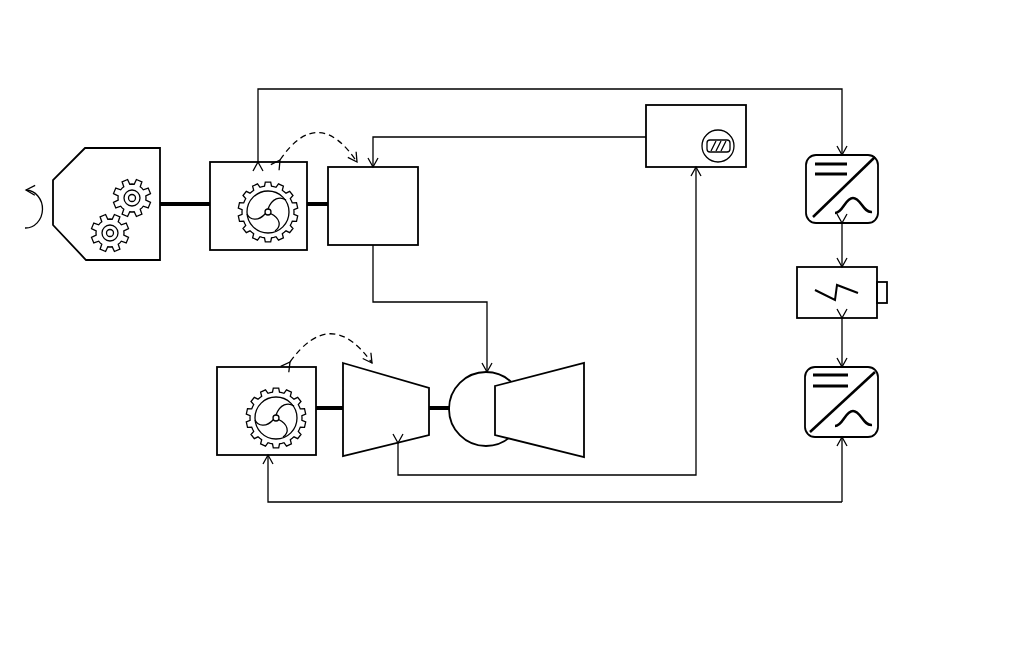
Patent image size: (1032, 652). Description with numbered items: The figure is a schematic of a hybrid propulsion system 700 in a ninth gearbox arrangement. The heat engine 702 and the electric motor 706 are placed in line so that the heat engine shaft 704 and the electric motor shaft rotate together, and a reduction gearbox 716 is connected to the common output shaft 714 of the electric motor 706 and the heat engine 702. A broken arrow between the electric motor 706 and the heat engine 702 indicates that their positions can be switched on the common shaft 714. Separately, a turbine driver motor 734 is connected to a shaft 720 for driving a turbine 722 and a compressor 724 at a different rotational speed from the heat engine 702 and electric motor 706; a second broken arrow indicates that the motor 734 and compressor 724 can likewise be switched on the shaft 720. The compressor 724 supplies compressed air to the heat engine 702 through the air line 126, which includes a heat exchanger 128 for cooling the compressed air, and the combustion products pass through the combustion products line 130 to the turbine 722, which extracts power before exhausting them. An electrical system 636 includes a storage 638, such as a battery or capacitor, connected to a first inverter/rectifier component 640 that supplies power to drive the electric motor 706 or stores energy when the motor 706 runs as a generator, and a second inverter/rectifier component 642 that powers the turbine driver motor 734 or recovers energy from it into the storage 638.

The system 700 is at (183, 40).
The reduction gearbox 716 is at (100, 148).
The common output shaft 714 is at (207, 154).
The electric motor 706 is at (235, 250).
The heat engine shaft 704 is at (318, 207).
The heat engine 702 is at (418, 227).
The air line 126 is at (515, 138).
The heat exchanger 128 is at (722, 167).
The combustion products line 130 is at (372, 281).
The compressor 724 is at (389, 375).
The turbine 722 is at (584, 400).
The shaft 720 is at (329, 412).
The turbine driver motor 734 is at (243, 456).
The electrical system 636 is at (836, 80).
The first inverter/rectifier component 640 is at (878, 188).
The storage 638 is at (878, 275).
The second inverter/rectifier component 642 is at (878, 393).